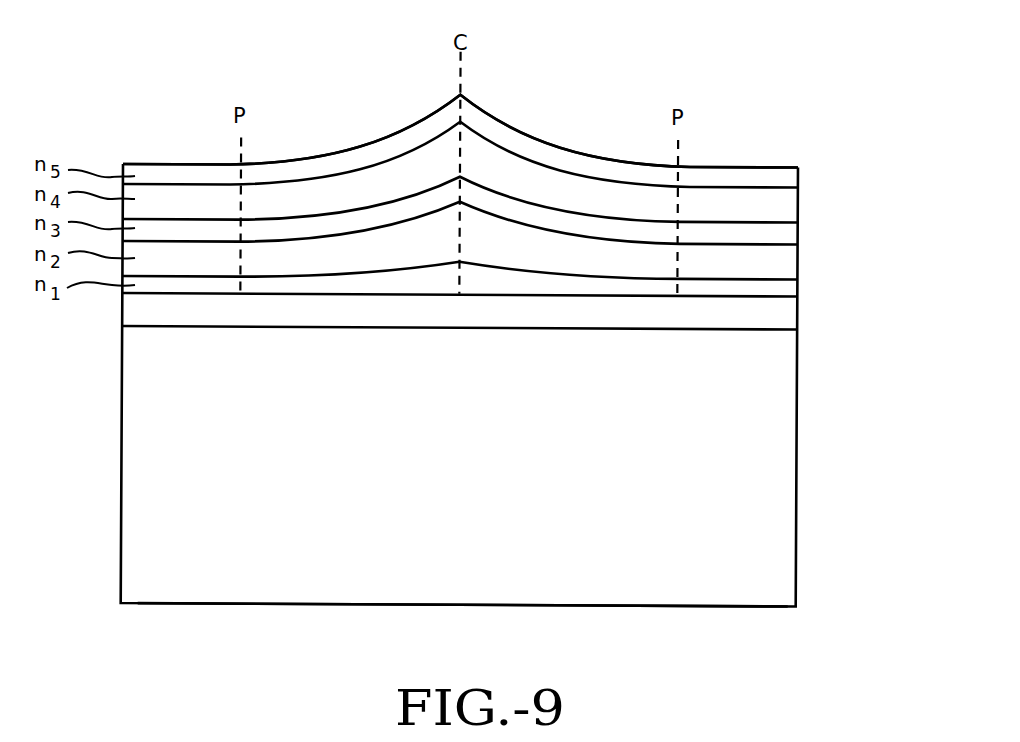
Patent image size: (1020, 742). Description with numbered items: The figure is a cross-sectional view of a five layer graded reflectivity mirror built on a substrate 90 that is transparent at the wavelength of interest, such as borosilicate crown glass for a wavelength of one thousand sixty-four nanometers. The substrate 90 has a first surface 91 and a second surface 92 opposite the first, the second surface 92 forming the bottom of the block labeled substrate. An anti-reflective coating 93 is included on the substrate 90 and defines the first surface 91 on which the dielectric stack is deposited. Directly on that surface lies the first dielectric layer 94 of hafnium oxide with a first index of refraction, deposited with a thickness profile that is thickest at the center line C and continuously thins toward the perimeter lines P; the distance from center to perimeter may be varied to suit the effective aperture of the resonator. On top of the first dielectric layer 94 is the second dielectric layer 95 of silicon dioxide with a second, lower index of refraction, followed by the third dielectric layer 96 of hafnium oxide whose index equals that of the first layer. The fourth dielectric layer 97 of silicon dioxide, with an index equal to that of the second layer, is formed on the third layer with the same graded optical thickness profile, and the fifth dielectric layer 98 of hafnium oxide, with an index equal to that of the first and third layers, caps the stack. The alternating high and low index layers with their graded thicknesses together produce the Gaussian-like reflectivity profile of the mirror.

The substrate 90 is at (798, 482).
The first surface 91 is at (665, 297).
The second surface 92 is at (712, 606).
The anti-reflective coating 93 is at (782, 310).
The first dielectric layer 94 is at (782, 280).
The second dielectric layer 95 is at (782, 255).
The third dielectric layer 96 is at (778, 230).
The fourth dielectric layer 97 is at (782, 200).
The fifth dielectric layer 98 is at (778, 175).